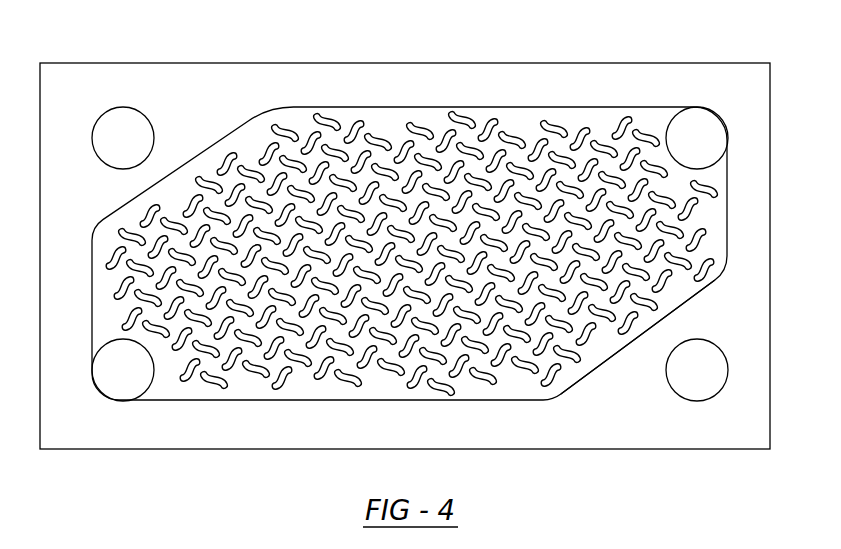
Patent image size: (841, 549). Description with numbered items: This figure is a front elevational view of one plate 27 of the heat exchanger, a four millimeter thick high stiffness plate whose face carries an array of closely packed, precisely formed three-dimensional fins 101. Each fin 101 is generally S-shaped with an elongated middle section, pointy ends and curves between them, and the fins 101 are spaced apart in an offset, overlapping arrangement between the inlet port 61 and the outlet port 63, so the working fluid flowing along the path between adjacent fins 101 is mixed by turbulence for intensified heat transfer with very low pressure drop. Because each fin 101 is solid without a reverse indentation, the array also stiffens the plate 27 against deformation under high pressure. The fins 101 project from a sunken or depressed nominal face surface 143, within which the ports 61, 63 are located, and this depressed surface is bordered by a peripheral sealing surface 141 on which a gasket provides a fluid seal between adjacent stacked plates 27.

The plate 27 is at (195, 88).
The fins 101 is at (379, 130).
The inlet port 61 is at (687, 130).
The outlet port 63 is at (122, 382).
The sealing surface 141 is at (757, 195).
The depressed nominal face surface 143 is at (695, 282).